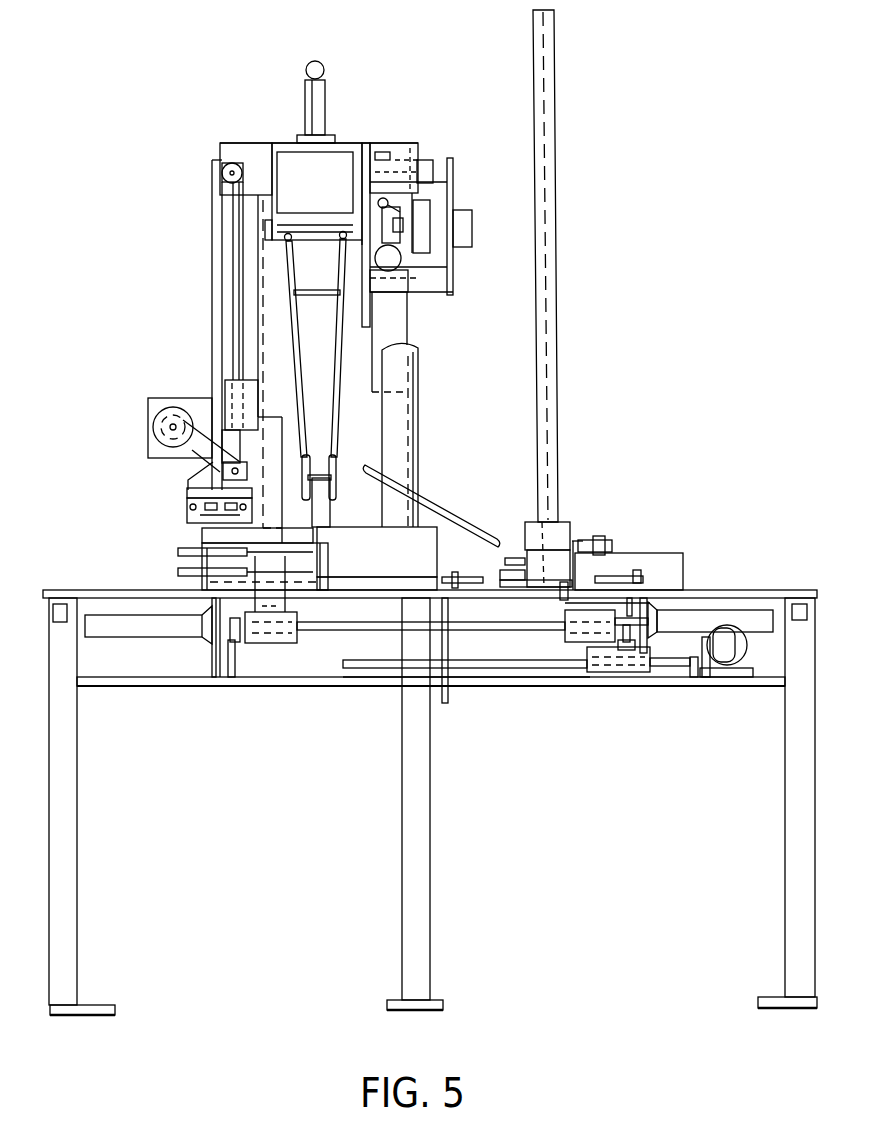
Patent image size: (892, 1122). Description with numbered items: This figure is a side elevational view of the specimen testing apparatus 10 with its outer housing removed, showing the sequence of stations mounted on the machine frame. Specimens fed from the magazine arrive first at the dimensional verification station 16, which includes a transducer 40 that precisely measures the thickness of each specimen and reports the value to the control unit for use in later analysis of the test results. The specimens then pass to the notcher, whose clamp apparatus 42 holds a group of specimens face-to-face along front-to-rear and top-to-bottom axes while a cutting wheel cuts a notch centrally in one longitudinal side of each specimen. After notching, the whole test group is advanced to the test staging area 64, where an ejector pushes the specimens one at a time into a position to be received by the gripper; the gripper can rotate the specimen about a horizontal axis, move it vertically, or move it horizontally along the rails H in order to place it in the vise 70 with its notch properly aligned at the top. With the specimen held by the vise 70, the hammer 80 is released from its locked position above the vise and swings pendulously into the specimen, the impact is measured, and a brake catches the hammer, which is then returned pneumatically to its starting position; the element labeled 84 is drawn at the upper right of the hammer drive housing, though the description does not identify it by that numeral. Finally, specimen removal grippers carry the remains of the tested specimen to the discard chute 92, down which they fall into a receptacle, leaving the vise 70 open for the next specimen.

The apparatus 10 is at (640, 254).
The dimensional verification station 16 is at (582, 511).
The transducer 40 is at (598, 537).
The clamp apparatus 42 is at (562, 600).
The test staging area 64 is at (338, 583).
The vise 70 is at (322, 503).
The hammer 80 is at (335, 474).
The drive housing 84 is at (466, 221).
The discard chute 92 is at (462, 514).
The rails H is at (241, 510).